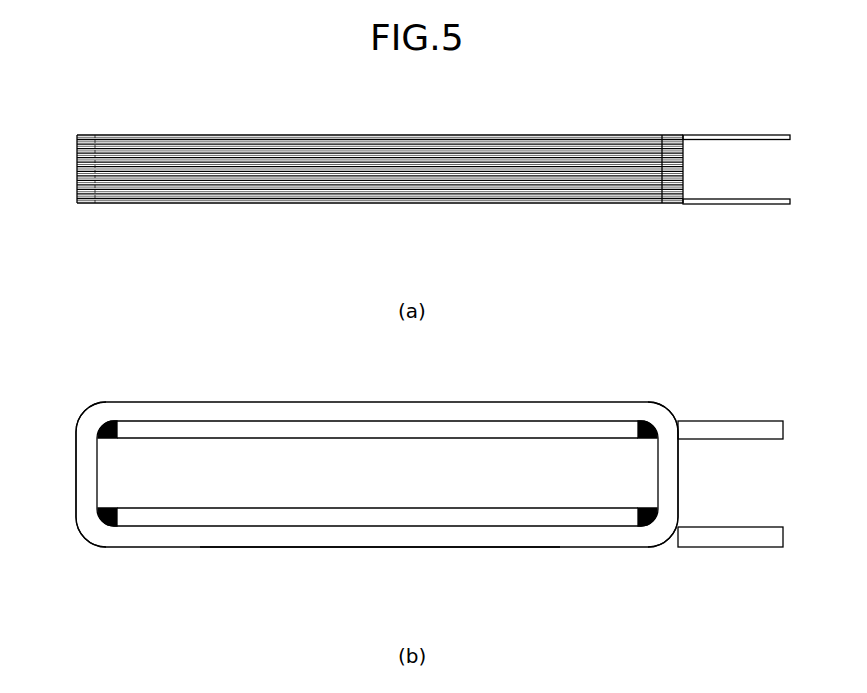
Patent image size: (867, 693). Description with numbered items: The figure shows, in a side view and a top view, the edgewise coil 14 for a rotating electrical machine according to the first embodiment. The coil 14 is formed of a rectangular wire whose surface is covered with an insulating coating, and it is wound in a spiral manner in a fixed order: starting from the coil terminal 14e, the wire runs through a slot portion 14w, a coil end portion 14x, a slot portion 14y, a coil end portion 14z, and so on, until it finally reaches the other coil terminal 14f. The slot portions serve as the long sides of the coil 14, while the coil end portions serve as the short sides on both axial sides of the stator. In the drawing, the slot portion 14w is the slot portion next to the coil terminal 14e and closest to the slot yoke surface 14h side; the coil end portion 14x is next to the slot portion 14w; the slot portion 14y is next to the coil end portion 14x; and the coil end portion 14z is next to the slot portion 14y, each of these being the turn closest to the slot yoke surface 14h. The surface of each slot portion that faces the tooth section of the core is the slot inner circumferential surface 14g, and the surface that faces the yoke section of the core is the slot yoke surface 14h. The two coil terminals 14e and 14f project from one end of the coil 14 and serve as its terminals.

The coil 14 is at (424, 93).
The coil end portion 14x is at (94, 204).
The slot portion 14y is at (458, 204).
The coil end portion 14z is at (667, 204).
The coil terminal 14e is at (733, 205).
The coil terminal 14f is at (733, 135).
The slot inner circumferential surface 14g is at (330, 432).
The slot yoke surface 14h is at (307, 538).
The slot portion 14w is at (418, 540).